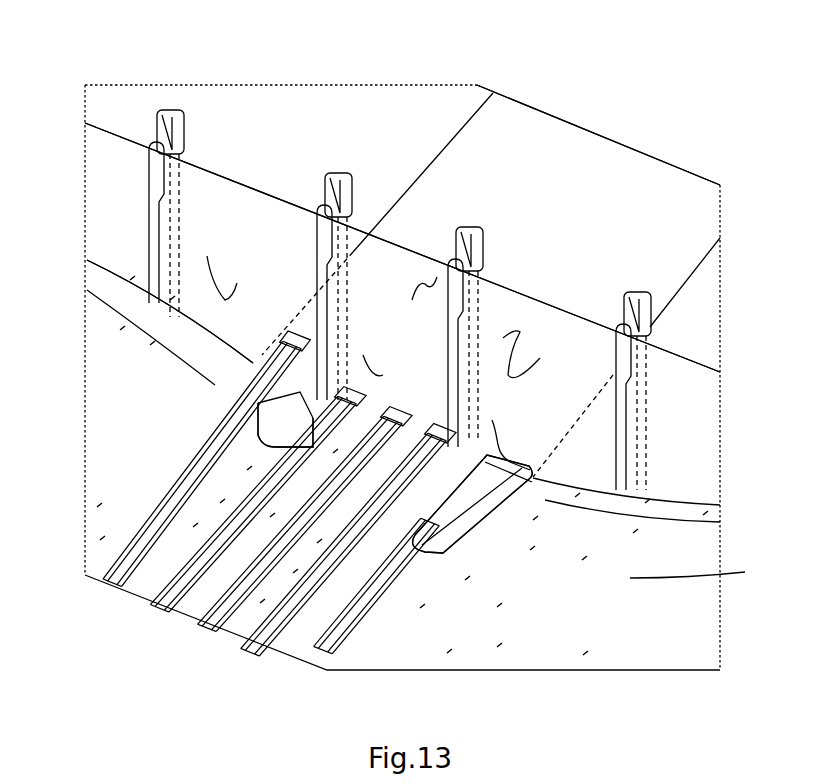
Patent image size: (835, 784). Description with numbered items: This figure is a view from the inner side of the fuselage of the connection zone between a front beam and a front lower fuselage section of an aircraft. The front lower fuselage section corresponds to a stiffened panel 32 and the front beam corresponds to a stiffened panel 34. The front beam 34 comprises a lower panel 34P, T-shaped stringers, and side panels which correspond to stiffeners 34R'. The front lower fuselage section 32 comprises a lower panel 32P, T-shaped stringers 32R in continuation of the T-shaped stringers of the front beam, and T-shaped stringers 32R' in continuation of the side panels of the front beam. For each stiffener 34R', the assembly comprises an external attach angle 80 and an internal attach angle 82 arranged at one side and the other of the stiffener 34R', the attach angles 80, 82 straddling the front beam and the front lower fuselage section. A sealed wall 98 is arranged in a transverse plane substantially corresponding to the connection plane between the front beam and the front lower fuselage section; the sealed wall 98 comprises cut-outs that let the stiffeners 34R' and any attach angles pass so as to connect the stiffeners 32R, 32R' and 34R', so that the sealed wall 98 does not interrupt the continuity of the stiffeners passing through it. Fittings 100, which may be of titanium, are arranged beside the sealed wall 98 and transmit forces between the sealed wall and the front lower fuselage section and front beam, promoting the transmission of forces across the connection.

The sealed wall 98 is at (120, 157).
The front beam 34 is at (527, 130).
The lower panel of the front beam 34P is at (672, 185).
The side panel stiffener of the front beam 34R' is at (367, 325).
The fitting 100 is at (307, 350).
The external attach angle 80 is at (228, 398).
The internal attach angle 82 is at (292, 420).
The front lower fuselage section 32 is at (150, 500).
The T-shaped stringer stiffener of the front lower fuselage section 32R is at (264, 549).
The T-shaped stringer stiffener in continuation of the side panels 32R' is at (256, 522).
The lower panel of the front lower fuselage section 32P is at (292, 642).